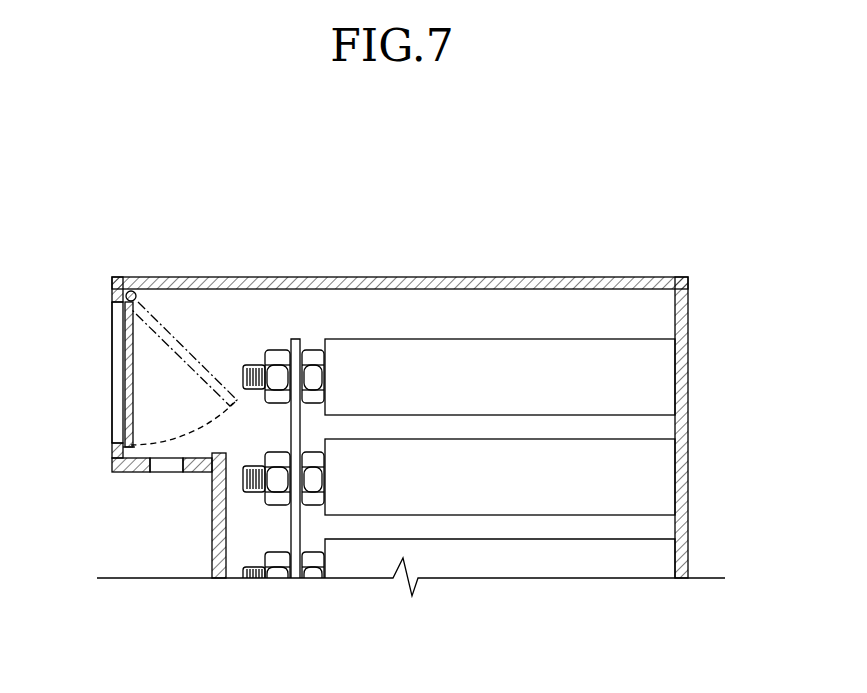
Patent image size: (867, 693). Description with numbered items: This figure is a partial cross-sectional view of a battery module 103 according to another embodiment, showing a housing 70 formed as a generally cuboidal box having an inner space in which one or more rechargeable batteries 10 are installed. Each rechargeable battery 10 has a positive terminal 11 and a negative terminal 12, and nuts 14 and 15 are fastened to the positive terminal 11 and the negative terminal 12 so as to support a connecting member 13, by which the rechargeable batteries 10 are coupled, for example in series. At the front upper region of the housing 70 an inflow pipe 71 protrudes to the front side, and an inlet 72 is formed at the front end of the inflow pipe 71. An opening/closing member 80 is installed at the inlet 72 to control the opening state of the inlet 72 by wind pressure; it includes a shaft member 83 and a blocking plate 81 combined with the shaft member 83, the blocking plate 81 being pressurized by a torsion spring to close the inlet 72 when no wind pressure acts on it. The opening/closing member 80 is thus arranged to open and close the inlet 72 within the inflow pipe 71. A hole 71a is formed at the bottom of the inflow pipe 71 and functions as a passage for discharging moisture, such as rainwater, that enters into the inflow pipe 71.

The battery module 103 is at (442, 225).
The rechargeable battery 10 is at (531, 330).
The positive terminal 11 is at (252, 494).
The negative terminal 12 is at (256, 363).
The connecting member 13 is at (296, 338).
The nut 14 is at (311, 349).
The nut 15 is at (278, 349).
The housing 70 is at (695, 359).
The inflow pipe 71 is at (113, 456).
The hole 71a is at (166, 470).
The inlet 72 is at (112, 322).
The opening/closing member 80 is at (108, 369).
The blocking plate 81 is at (128, 398).
The shaft member 83 is at (132, 291).